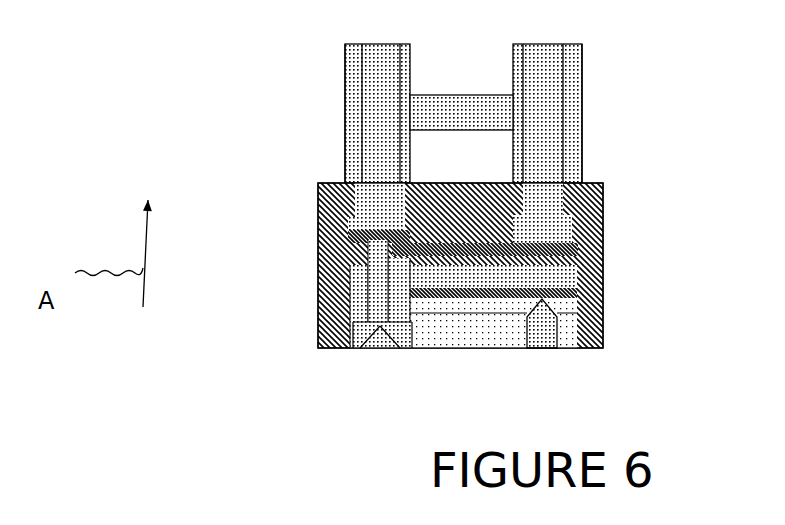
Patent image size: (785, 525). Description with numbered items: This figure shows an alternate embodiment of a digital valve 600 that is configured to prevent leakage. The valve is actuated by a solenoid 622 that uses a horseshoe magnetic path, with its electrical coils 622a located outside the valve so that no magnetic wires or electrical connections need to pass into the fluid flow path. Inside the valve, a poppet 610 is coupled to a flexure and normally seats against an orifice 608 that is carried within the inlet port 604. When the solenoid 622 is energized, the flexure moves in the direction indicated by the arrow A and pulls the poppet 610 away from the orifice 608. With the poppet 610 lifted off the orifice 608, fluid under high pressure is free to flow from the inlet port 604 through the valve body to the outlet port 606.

The digital valve 600 is at (396, 259).
The solenoid 622 is at (372, 203).
The electrical coils 622a is at (542, 178).
The poppet 610 is at (378, 313).
The orifice 608 is at (365, 352).
The inlet port 604 is at (382, 363).
The outlet port 606 is at (542, 358).